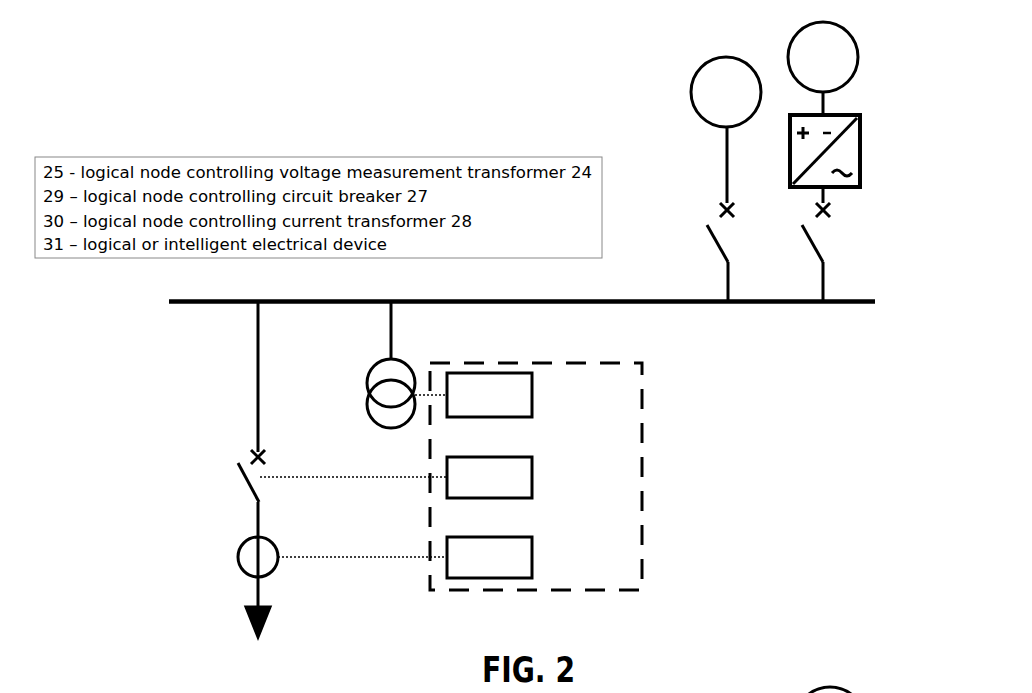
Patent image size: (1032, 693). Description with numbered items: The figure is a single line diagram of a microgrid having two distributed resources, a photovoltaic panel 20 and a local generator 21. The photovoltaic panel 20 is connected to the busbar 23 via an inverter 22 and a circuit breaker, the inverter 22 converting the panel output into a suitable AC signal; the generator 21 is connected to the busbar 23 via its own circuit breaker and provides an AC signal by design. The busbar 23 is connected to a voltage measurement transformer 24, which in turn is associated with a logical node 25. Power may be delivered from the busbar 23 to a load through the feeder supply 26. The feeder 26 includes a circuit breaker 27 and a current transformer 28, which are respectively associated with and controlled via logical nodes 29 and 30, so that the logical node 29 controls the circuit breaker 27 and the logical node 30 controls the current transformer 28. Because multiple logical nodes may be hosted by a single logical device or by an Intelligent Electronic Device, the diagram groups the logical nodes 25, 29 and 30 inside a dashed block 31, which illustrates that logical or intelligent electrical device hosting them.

The photovoltaic panel 20 is at (846, 68).
The local generator 21 is at (709, 174).
The inverter 22 is at (847, 208).
The busbar 23 is at (534, 286).
The voltage measurement transformer 24 is at (379, 379).
The logical node 25 is at (473, 395).
The feeder supply 26 is at (244, 383).
The circuit breaker 27 is at (226, 500).
The current transformer 28 is at (238, 587).
The logical node 29 is at (396, 477).
The logical node 30 is at (405, 557).
The dashed block 31 is at (536, 476).